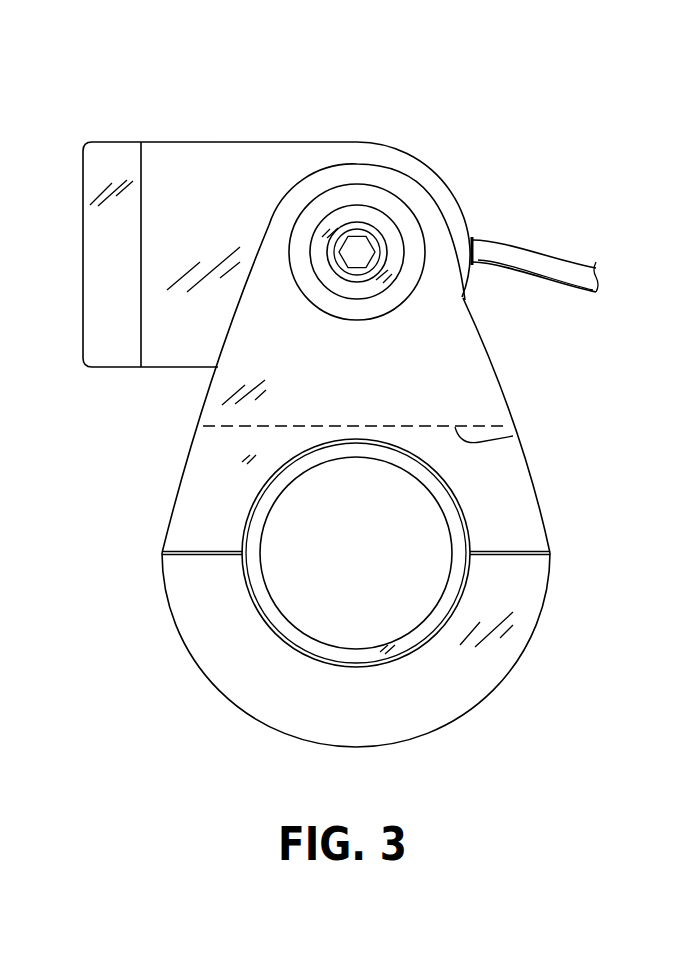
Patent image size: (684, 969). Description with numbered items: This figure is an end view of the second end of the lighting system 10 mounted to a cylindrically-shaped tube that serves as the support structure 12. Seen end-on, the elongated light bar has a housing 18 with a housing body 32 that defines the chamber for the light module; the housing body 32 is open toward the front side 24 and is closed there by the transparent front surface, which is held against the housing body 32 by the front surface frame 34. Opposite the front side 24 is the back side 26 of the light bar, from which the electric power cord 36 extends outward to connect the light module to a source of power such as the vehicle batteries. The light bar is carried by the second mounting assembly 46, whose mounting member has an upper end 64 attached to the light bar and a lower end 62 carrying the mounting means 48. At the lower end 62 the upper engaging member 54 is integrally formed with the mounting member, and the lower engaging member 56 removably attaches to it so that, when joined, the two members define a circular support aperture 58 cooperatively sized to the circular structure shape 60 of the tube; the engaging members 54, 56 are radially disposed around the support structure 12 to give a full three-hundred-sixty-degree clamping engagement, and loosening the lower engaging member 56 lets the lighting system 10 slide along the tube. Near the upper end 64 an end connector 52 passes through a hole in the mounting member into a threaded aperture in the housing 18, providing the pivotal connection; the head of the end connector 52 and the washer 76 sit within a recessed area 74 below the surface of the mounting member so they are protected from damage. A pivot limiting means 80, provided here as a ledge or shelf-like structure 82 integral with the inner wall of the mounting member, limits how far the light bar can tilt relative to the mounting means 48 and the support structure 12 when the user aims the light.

The lighting system 10 is at (530, 121).
The support structure 12 is at (457, 517).
The housing 18 is at (306, 129).
The front side 24 is at (88, 118).
The back side 26 is at (460, 138).
The housing body 32 is at (203, 157).
The front surface frame 34 is at (115, 348).
The electric power cord 36 is at (537, 268).
The second mounting assembly 46 is at (155, 421).
The mounting means 48 is at (158, 661).
The end connector 52 is at (358, 238).
The upper engaging member 54 is at (188, 528).
The lower engaging member 56 is at (468, 693).
The support aperture 58 is at (467, 587).
The structure shape 60 is at (289, 662).
The lower end 62 is at (573, 525).
The upper end 64 is at (441, 204).
The recessed area 74 is at (370, 312).
The washer 76 is at (398, 270).
The pivot limiting means 80 is at (260, 437).
The ledge or shelf-like structure 82 is at (513, 434).